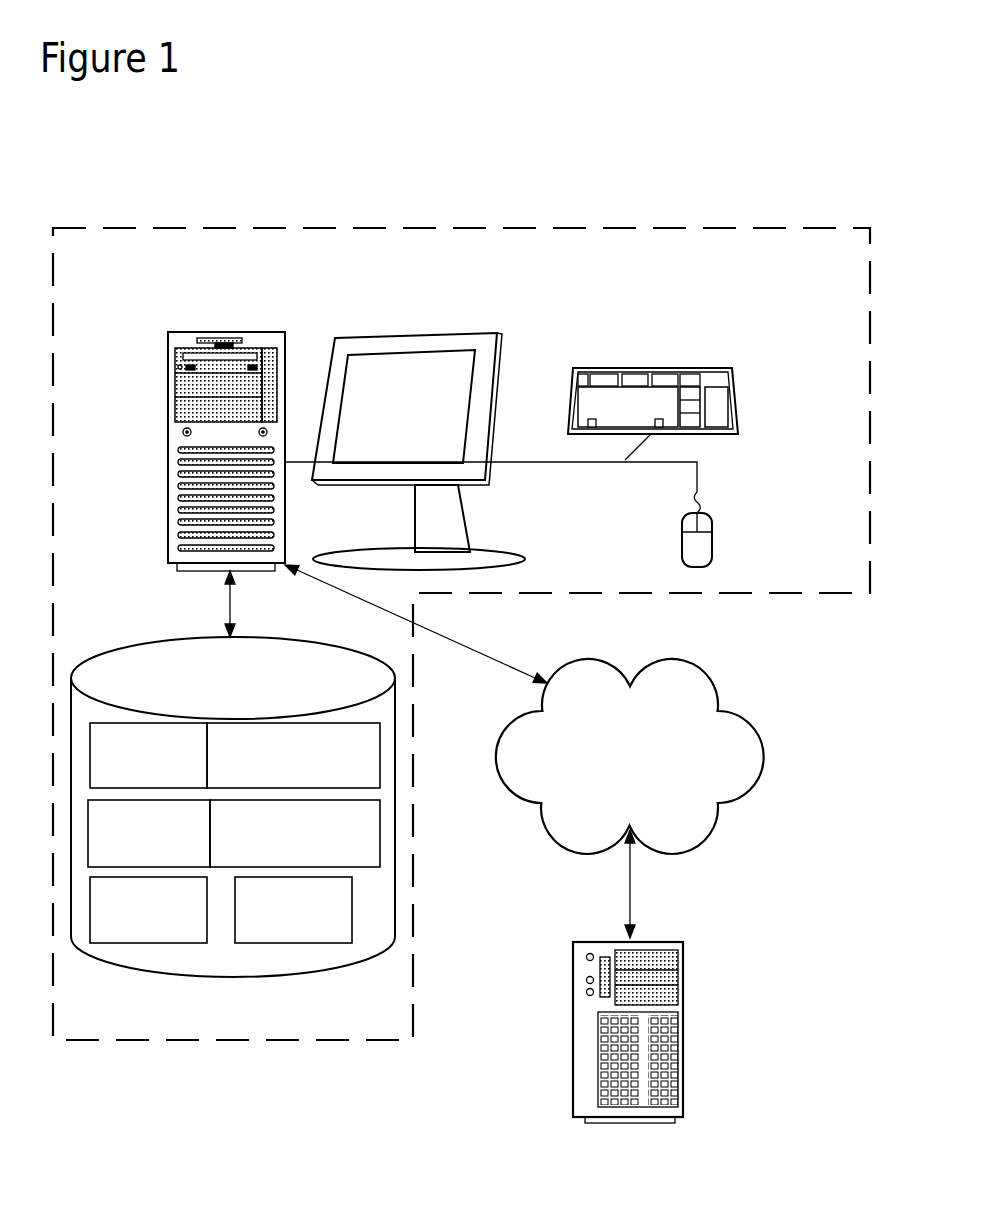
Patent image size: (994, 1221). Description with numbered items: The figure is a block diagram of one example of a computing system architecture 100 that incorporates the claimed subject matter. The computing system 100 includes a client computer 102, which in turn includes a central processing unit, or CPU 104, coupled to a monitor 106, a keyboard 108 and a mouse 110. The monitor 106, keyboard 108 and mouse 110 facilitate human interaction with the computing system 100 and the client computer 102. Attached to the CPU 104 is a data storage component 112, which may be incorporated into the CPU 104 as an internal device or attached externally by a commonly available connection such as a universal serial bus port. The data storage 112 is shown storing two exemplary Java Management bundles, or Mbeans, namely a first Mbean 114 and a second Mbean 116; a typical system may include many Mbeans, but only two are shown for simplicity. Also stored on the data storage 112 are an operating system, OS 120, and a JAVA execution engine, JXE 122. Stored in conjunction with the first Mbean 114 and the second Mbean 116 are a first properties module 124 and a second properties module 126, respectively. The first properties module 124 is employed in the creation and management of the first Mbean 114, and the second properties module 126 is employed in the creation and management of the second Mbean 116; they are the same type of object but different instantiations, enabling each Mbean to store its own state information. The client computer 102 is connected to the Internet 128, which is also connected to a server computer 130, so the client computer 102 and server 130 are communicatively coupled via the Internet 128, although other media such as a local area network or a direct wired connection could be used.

The computing system architecture 100 is at (414, 200).
The client computer 102 is at (155, 290).
The central processing unit (CPU) 104 is at (272, 333).
The monitor 106 is at (500, 403).
The keyboard 108 is at (713, 380).
The mouse 110 is at (693, 567).
The data storage component 112 is at (243, 703).
The first Mbean (Mbean_1) 114 is at (165, 776).
The second Mbean (Mbean_2) 116 is at (165, 855).
The operating system (OS) 120 is at (278, 931).
The JAVA execution engine (JXE) 122 is at (165, 931).
The properties_1 module 124 is at (310, 776).
The properties_1 module 126 is at (310, 855).
The Internet 128 is at (613, 780).
The server computer 130 is at (683, 1032).